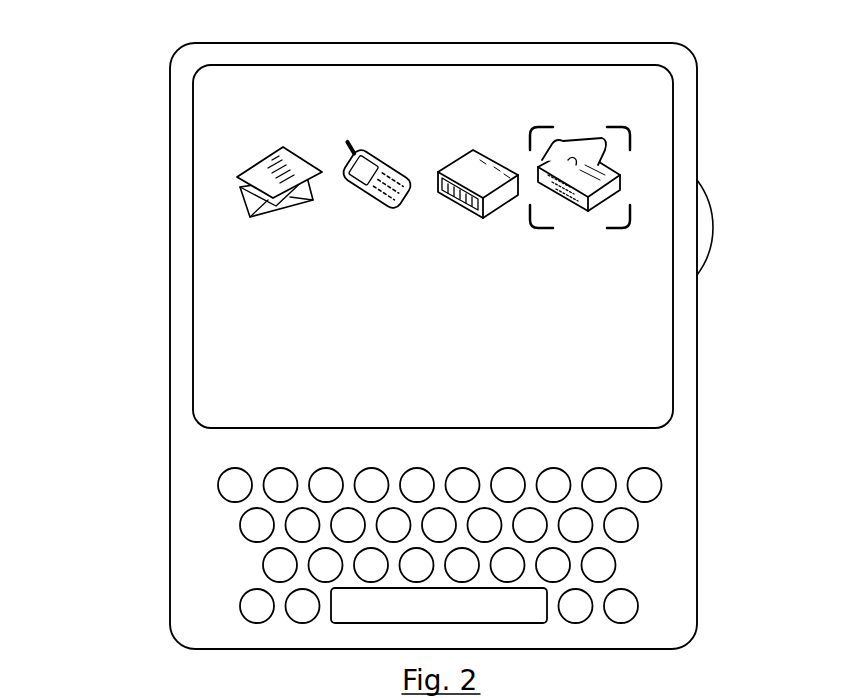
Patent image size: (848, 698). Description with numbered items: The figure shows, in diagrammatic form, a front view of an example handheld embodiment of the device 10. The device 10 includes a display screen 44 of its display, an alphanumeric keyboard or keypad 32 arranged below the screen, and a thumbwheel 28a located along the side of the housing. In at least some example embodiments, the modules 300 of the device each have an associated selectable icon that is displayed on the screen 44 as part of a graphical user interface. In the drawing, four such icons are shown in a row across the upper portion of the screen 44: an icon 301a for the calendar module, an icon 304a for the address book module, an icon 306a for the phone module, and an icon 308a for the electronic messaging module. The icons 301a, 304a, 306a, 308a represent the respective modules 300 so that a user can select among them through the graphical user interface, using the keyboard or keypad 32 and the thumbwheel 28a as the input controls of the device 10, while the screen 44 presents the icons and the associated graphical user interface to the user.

The device 10 is at (155, 31).
The thumbwheel 28a is at (708, 255).
The alphanumeric keyboard or keypad 32 is at (672, 560).
The display screen 44 is at (253, 363).
The icon for calendar 301a is at (572, 212).
The icon for address book 304a is at (463, 210).
The icon for phone 306a is at (377, 200).
The icon for electronic messaging 308a is at (260, 224).
The modules 300 is at (591, 691).